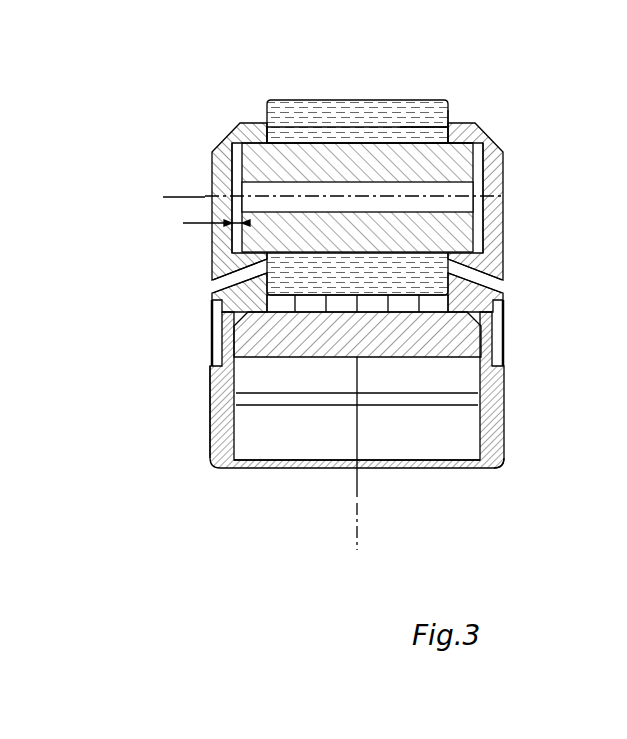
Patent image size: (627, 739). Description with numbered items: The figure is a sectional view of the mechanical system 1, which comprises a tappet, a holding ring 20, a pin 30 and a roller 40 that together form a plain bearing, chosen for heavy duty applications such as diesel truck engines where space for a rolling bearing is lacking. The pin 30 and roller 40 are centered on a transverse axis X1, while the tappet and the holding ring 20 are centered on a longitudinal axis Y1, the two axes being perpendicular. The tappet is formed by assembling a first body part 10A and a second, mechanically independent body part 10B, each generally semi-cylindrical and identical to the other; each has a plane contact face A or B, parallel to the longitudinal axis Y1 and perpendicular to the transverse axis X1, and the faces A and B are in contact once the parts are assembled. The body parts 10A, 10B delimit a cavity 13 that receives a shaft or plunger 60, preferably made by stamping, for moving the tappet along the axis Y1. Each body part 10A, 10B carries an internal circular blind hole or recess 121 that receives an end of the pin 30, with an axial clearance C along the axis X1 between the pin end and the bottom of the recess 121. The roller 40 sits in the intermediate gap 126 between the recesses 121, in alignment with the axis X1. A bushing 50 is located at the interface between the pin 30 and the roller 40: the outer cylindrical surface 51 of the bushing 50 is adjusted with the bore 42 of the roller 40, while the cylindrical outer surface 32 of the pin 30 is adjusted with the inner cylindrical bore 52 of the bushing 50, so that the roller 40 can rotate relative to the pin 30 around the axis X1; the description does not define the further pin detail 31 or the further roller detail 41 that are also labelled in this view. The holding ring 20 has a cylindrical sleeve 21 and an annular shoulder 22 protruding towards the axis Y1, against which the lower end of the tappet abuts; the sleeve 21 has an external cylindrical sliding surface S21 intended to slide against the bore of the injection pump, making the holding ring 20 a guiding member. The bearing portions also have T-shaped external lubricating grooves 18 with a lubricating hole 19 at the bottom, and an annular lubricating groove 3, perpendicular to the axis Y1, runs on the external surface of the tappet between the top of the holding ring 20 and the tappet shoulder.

The system 1 is at (197, 98).
The lubricating groove 3 is at (508, 370).
The first body part 10A is at (208, 236).
The second body part 10B is at (507, 256).
The cavity 13 is at (418, 435).
The second external lubricating groove 18 is at (216, 330).
The lubricating hole 19 is at (217, 284).
The holding ring 20 is at (502, 437).
The sleeve 21 is at (502, 391).
The annular shoulder 22 is at (488, 470).
The pin 30 is at (465, 174).
The bore 31 is at (447, 208).
The cylindrical outer surface 32 is at (349, 142).
The roller 40 is at (447, 104).
The cover 41 is at (381, 97).
The bore 42 is at (337, 130).
The bushing 50 is at (443, 112).
The outer cylindrical surface 51 is at (400, 118).
The inner cylindrical bore 52 is at (425, 151).
The plunger 60 is at (260, 338).
The recess 121 is at (237, 161).
The intermediate gap 126 is at (490, 163).
The external cylindrical sliding surface S21 is at (208, 437).
The plane contact face A is at (361, 386).
The plane contact face B is at (355, 432).
The axial clearance C is at (216, 214).
The transverse axis X1 is at (325, 184).
The longitudinal axis Y1 is at (369, 454).